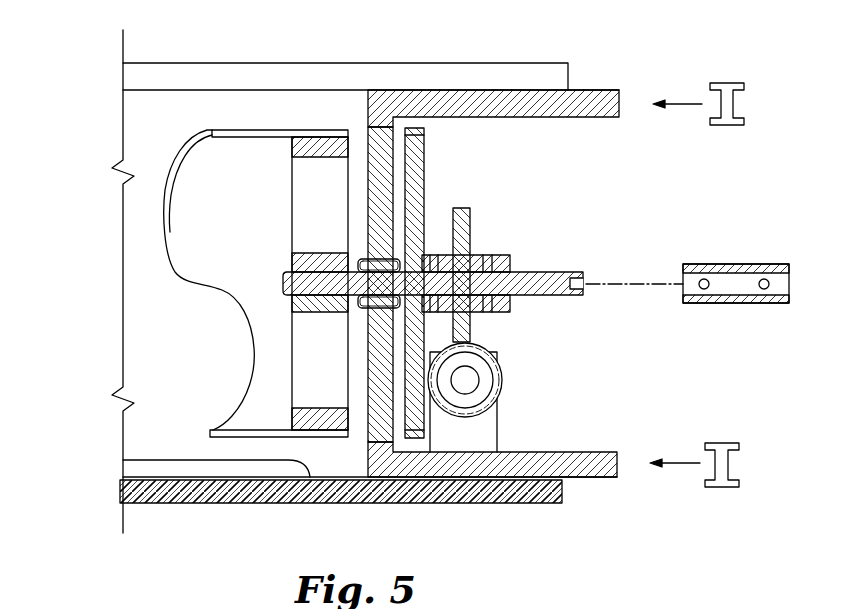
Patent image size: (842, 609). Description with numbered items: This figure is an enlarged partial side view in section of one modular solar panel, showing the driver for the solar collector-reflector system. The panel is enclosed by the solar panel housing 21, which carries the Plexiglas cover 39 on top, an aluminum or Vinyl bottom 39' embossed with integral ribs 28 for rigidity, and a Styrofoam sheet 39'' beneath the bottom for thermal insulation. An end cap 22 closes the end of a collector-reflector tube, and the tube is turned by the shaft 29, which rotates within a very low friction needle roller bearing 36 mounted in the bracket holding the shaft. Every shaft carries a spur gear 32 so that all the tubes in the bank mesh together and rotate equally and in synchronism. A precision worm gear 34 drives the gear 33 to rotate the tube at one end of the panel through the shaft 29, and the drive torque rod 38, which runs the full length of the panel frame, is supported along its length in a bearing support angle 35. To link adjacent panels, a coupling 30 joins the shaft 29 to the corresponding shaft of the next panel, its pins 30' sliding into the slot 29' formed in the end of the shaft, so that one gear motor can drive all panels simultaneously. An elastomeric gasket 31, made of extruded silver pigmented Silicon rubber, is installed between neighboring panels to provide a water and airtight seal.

The solar panel housing 21 is at (585, 95).
The end cap 22 is at (758, 608).
The integral rib 28 is at (183, 456).
The shaft 29 is at (468, 270).
The slot 29' is at (612, 304).
The coupling 30 is at (758, 249).
The pin 30' is at (796, 259).
The elastomeric gasket 31 is at (729, 83).
The spur gear 32 is at (425, 170).
The gear 33 is at (471, 226).
The precision worm gear 34 is at (501, 373).
The bearing support angle 35 is at (497, 434).
The needle roller bearing 36 is at (348, 306).
The drive torque rod 38 is at (468, 378).
The Plexiglas cover 39 is at (371, 50).
The bottom 39' is at (507, 482).
The Styrofoam sheet 39'' is at (344, 516).